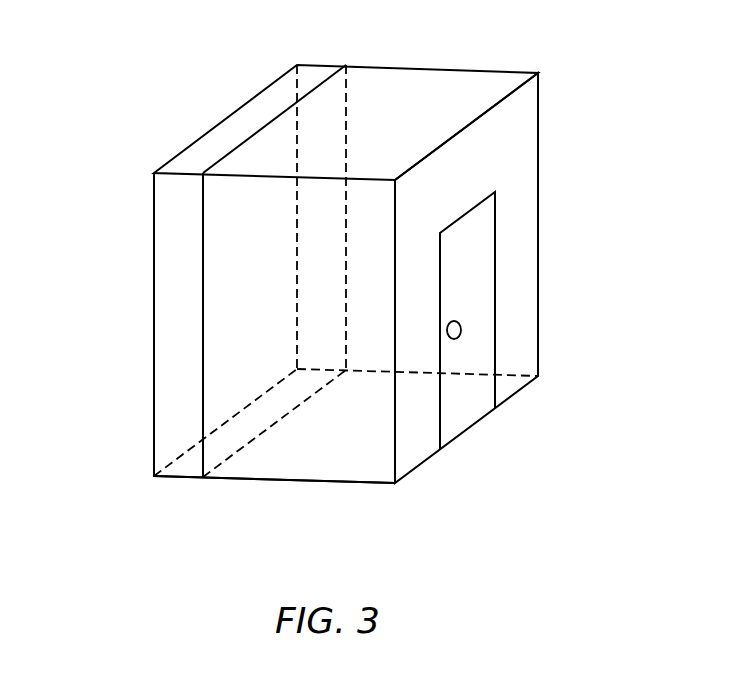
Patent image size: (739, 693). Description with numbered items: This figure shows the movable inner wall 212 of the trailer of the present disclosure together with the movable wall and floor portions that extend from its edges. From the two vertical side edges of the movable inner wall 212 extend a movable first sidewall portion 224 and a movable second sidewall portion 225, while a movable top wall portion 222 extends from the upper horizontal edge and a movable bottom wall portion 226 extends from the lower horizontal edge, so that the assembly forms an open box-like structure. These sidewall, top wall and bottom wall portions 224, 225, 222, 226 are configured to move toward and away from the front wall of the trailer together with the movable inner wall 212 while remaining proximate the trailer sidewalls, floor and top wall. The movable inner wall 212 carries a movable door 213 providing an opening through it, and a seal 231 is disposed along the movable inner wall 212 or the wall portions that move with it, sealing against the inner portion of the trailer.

The movable inner wall 212 is at (487, 338).
The movable door 213 is at (463, 408).
The movable top wall portion 222 is at (413, 108).
The movable first sidewall portion 224 is at (507, 187).
The movable second sidewall portion 225 is at (175, 283).
The movable bottom wall portion 226 is at (303, 463).
The seal 231 is at (258, 132).